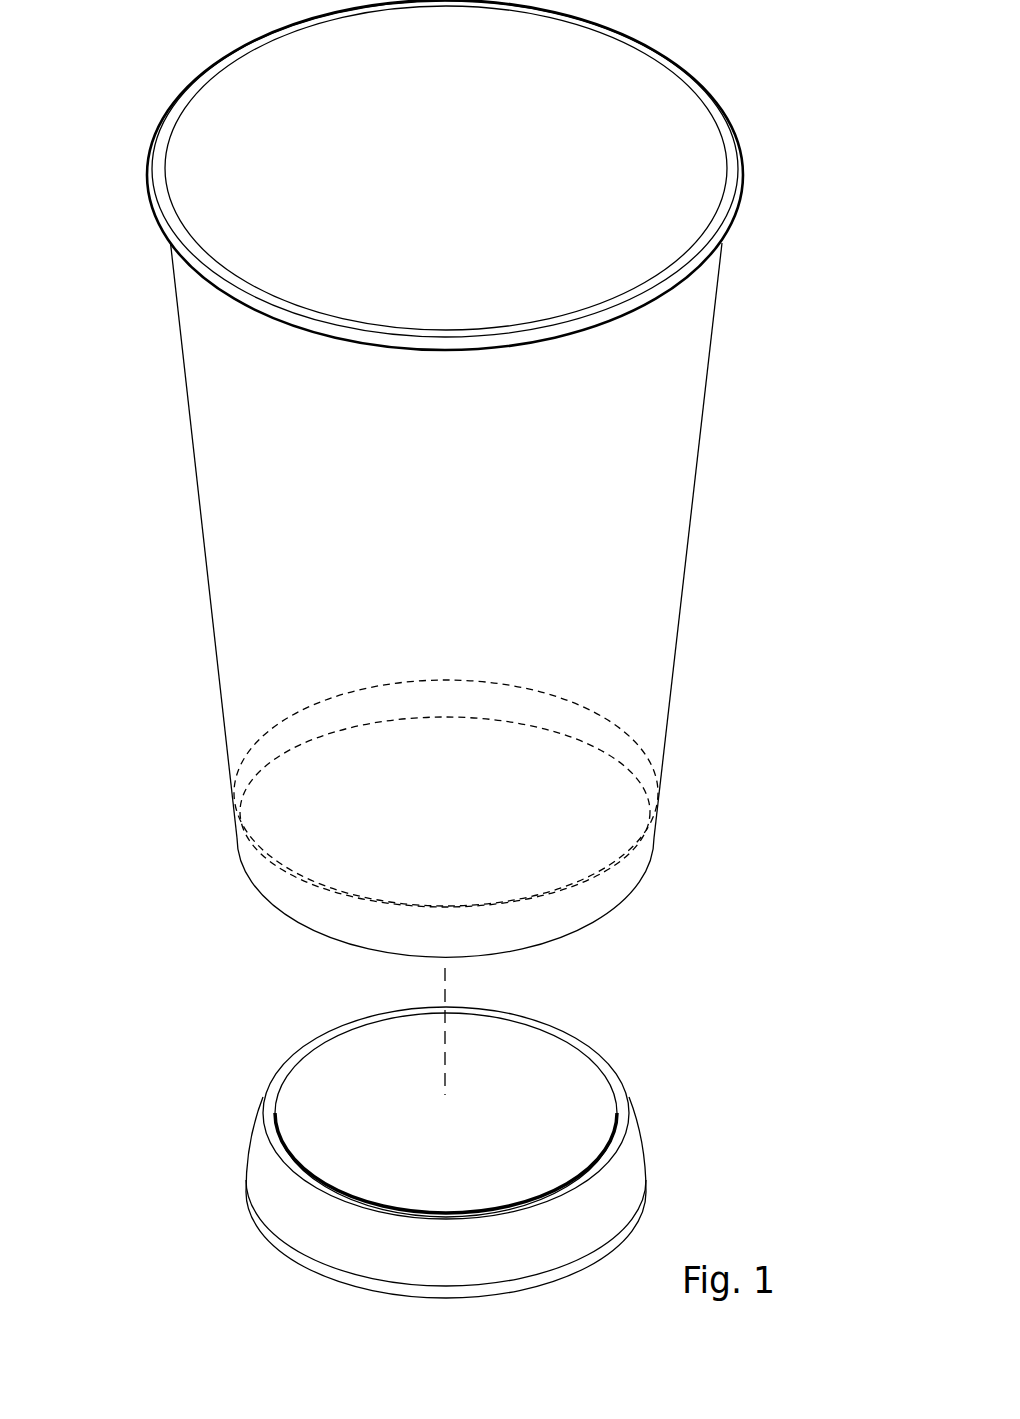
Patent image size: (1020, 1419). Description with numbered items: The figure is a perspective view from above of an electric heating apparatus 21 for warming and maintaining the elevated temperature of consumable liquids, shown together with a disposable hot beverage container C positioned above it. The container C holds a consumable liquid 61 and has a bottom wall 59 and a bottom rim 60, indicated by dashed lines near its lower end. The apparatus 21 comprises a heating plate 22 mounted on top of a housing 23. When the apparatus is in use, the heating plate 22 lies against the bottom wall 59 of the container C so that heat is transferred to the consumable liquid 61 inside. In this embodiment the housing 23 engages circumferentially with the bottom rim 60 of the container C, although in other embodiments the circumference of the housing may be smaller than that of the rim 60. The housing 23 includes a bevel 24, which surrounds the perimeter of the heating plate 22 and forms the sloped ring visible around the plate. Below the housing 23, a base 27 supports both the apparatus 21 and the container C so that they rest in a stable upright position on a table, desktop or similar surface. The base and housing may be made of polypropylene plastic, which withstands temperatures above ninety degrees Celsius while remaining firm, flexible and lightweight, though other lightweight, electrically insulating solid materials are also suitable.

The disposable hot beverage container C is at (429, 483).
The consumable liquid 61 is at (618, 633).
The bottom rim 60 is at (297, 898).
The bottom wall 59 is at (533, 852).
The electric heating apparatus 21 is at (449, 1152).
The heating plate 22 is at (573, 1095).
The housing 23 is at (603, 1208).
The bevel 24 is at (275, 1098).
The base 27 is at (335, 1275).